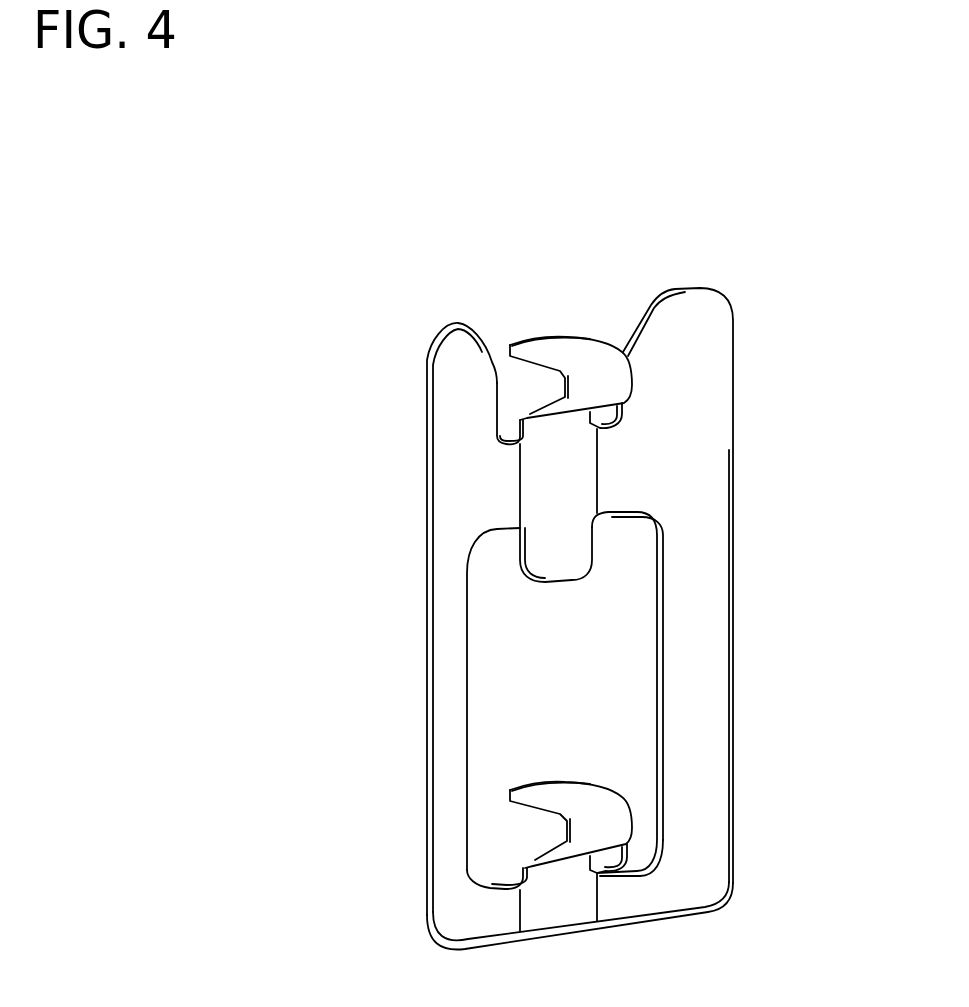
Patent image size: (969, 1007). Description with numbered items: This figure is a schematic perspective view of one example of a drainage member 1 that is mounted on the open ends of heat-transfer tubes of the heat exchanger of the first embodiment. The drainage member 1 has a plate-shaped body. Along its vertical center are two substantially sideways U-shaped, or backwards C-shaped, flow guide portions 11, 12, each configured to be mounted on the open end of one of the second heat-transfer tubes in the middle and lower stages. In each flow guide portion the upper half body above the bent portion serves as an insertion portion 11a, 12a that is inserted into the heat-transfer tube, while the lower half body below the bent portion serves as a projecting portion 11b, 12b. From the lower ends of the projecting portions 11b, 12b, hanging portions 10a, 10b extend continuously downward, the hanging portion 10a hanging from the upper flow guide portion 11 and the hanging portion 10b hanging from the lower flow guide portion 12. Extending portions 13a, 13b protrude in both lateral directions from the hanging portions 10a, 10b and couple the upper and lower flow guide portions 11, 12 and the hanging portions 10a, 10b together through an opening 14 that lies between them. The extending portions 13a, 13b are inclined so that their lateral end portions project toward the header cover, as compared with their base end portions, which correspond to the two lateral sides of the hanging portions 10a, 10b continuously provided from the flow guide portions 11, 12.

The drainage member 1 is at (732, 290).
The hanging portion 10a is at (578, 470).
The hanging portion 10b is at (558, 908).
The flow guide portion 11 is at (530, 330).
The insertion portion 11a is at (568, 347).
The projecting portion 11b is at (530, 403).
The flow guide portion 12 is at (530, 778).
The insertion portion 12a is at (560, 783).
The projecting portion 12b is at (540, 850).
The extending portion 13a is at (443, 643).
The extending portion 13b is at (723, 565).
The opening 14 is at (657, 668).